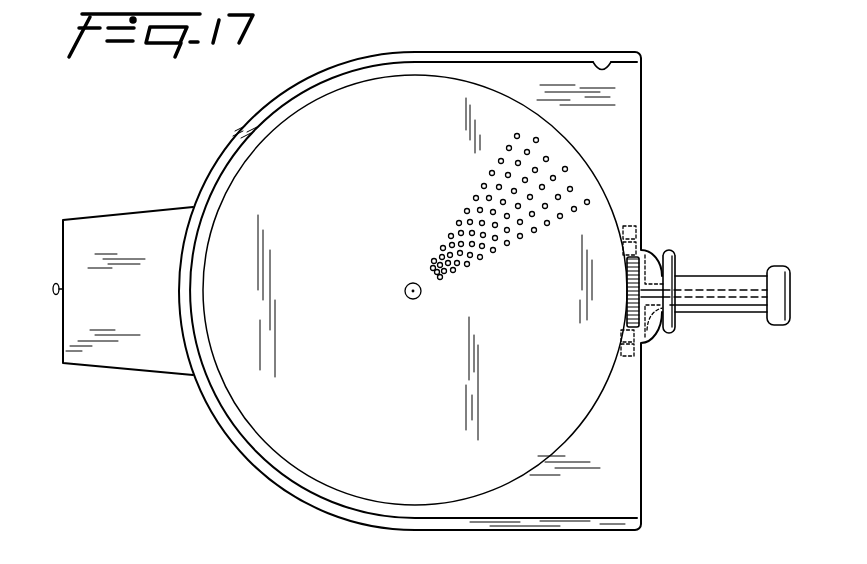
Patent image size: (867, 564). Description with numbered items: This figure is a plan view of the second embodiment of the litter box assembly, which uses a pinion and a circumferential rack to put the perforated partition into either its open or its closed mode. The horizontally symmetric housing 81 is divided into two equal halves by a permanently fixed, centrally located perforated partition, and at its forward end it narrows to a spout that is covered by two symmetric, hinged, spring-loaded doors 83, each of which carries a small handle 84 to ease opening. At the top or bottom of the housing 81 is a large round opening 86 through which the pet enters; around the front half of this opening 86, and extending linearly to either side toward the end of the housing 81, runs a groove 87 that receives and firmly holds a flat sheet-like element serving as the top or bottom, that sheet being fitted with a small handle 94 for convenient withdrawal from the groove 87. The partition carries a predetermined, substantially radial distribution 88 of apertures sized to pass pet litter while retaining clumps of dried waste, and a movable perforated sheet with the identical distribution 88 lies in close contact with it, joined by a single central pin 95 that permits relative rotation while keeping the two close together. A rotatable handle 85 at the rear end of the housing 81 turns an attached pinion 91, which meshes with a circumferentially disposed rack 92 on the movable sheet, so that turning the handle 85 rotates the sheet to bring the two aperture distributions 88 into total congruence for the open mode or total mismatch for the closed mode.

The housing 81 is at (237, 132).
The door 83 is at (63, 233).
The handle 84 is at (55, 297).
The rotatable handle 85 is at (722, 280).
The round opening 86 is at (373, 97).
The groove 87 is at (600, 68).
The distribution of apertures 88 is at (570, 158).
The pinion 91 is at (628, 327).
The circumferential rack 92 is at (634, 240).
The small handle 94 is at (673, 332).
The central pin 95 is at (405, 295).